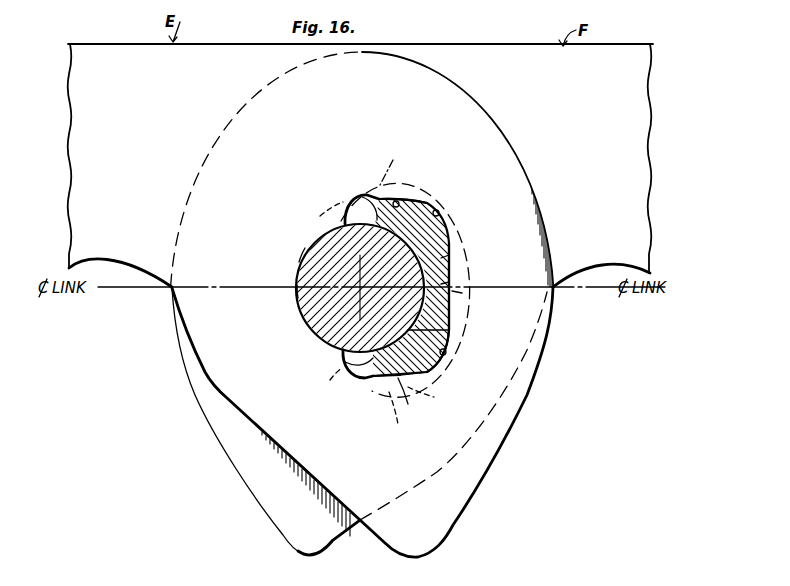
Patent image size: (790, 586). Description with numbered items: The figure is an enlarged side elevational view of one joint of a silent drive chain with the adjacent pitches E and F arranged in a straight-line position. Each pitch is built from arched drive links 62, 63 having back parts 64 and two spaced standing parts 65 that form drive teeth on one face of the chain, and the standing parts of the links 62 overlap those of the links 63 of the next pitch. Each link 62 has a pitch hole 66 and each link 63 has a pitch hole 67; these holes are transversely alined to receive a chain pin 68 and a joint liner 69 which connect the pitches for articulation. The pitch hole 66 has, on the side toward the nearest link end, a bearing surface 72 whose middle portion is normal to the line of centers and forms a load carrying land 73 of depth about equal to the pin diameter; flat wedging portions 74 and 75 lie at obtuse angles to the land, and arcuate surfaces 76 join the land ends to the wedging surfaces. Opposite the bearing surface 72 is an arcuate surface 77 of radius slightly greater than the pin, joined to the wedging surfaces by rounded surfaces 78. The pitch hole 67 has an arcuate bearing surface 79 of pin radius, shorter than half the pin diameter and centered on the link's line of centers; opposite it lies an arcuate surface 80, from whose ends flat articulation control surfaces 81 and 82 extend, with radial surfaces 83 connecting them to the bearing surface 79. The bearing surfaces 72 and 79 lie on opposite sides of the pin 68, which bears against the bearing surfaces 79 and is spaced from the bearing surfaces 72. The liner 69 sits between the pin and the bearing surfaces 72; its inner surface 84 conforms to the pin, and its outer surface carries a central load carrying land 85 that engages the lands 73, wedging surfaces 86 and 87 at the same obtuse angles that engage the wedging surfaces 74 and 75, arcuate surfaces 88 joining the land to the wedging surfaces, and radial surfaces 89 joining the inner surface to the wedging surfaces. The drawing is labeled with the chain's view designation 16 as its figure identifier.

The link eye outer wall 16 is at (445, 226).
The drive link 62 is at (81, 135).
The drive link 63 is at (647, 171).
The back part 64 is at (120, 55).
The standing part 65 is at (262, 498).
The pitch hole 66 is at (377, 387).
The pitch hole 67 is at (474, 315).
The chain pin 68 is at (328, 320).
The joint liner 69 is at (440, 237).
The bearing surface 72 is at (452, 284).
The load carrying land 73 is at (448, 260).
The wedging portion 74 is at (420, 203).
The wedging portion 75 is at (408, 384).
The arcuate surface 76 is at (423, 372).
The arcuate surface 77 is at (298, 300).
The rounded surface 78 is at (345, 203).
The bearing surface 79 is at (299, 258).
The arcuate surface 80 is at (431, 397).
The articulation control surface 81 is at (391, 167).
The articulation control surface 82 is at (395, 417).
The radial surface 83 is at (320, 300).
The inner surface 84 is at (440, 331).
The load carrying land 85 is at (462, 293).
The wedging surface 86 is at (399, 202).
The wedging surface 87 is at (412, 400).
The arcuate surface 88 is at (439, 211).
The radial surface 89 is at (362, 197).